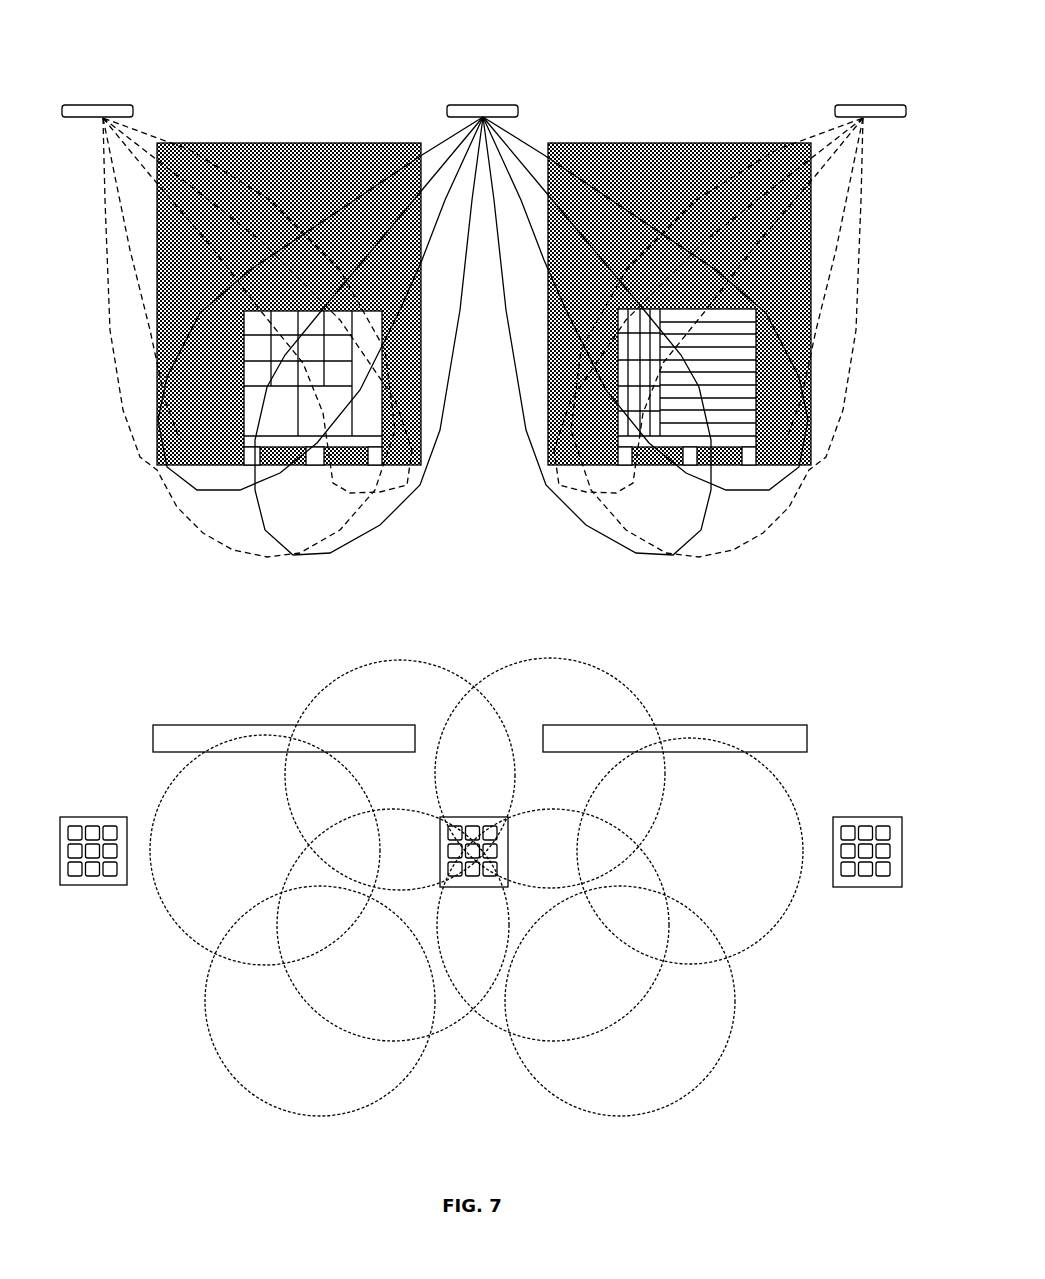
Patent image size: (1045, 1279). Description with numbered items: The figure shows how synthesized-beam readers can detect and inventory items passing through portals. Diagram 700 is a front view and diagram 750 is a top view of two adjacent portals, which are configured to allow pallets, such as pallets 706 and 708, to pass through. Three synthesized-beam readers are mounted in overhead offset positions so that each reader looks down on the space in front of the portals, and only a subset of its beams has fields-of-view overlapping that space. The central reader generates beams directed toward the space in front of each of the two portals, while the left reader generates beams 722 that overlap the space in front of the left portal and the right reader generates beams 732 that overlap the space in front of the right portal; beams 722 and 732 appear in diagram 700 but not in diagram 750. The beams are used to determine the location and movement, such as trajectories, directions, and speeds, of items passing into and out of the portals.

The diagram 700 is at (41, 28).
The pallet 706 is at (231, 450).
The pallet 708 is at (780, 461).
The beams 722 is at (160, 310).
The beams 732 is at (806, 310).
The diagram 750 is at (46, 665).